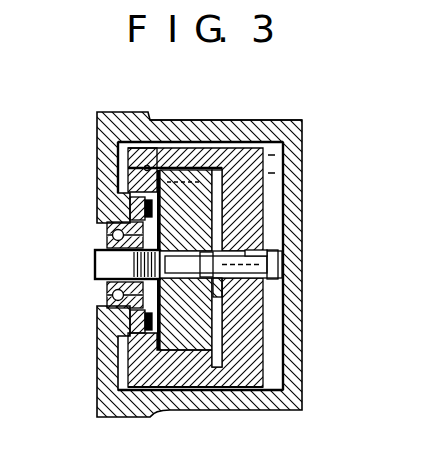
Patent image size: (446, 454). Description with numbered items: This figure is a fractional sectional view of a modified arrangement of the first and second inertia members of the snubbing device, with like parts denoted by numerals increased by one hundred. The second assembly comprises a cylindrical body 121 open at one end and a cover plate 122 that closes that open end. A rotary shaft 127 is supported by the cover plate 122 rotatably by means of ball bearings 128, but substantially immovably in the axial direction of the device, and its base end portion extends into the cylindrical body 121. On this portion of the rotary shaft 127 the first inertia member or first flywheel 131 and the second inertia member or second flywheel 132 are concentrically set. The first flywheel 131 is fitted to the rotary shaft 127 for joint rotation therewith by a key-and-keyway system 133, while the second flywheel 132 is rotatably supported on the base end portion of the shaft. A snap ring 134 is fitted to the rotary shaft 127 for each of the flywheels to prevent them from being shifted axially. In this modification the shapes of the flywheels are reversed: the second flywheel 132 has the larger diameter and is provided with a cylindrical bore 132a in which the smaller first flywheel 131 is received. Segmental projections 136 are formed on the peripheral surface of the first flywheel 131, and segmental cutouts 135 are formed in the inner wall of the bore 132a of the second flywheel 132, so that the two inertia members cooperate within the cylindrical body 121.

The cylindrical body 121 is at (223, 124).
The cover plate 122 is at (106, 120).
The rotary shaft 127 is at (258, 250).
The ball bearings 128 is at (107, 225).
The first inertia member or first flywheel 131 is at (184, 345).
The second inertia member or second flywheel 132 is at (253, 363).
The cylindrical bore 132a is at (222, 184).
The key-and-keyway system 133 is at (127, 265).
The snap ring 134 is at (196, 262).
The segmental cutout 135 is at (148, 166).
The segmental projections 136 is at (217, 172).